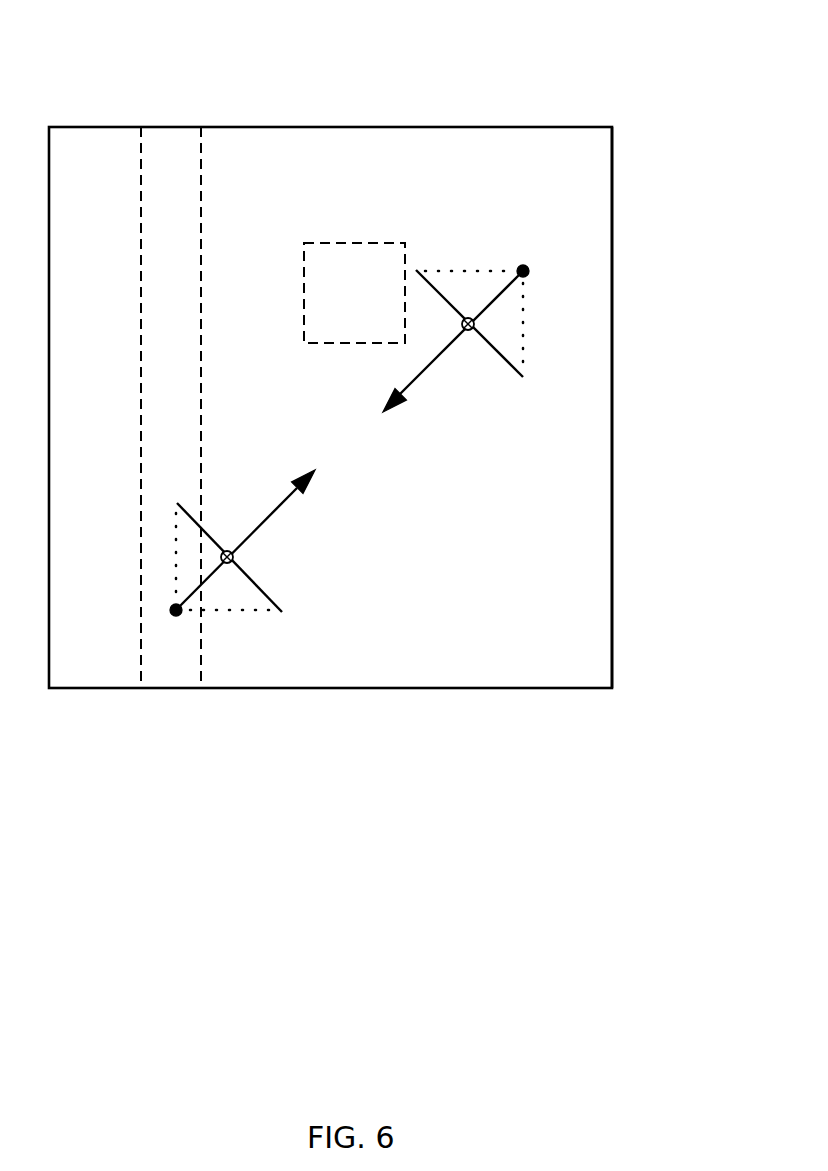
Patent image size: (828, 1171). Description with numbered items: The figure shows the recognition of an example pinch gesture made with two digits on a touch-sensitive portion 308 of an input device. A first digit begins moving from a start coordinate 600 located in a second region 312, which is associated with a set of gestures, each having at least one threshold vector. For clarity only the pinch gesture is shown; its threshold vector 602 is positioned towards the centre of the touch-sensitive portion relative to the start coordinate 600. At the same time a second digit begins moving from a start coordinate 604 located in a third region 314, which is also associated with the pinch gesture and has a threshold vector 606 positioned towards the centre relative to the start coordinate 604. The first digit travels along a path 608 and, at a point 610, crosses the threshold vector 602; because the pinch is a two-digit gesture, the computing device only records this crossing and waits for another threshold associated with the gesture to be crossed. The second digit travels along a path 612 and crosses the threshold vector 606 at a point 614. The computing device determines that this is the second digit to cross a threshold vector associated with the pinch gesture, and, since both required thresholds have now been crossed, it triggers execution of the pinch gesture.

The display area 308 is at (478, 78).
The second region 312 is at (606, 490).
The third region 314 is at (167, 140).
The start coordinate 600 is at (522, 264).
The threshold vector 602 is at (428, 283).
The start coordinate 604 is at (176, 618).
The threshold vector 606 is at (272, 598).
The path 608 is at (413, 385).
The point 610 is at (472, 332).
The path 612 is at (290, 498).
The second intersection point 614 is at (228, 548).